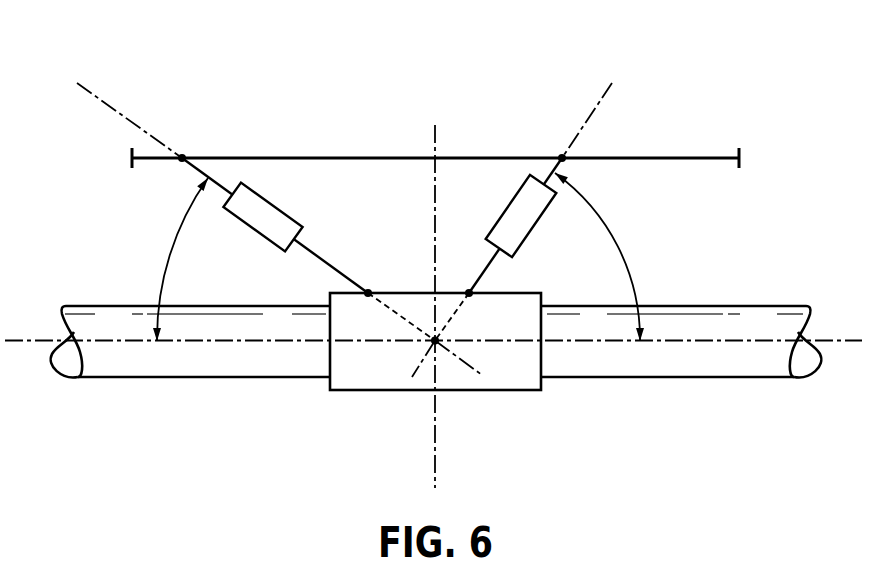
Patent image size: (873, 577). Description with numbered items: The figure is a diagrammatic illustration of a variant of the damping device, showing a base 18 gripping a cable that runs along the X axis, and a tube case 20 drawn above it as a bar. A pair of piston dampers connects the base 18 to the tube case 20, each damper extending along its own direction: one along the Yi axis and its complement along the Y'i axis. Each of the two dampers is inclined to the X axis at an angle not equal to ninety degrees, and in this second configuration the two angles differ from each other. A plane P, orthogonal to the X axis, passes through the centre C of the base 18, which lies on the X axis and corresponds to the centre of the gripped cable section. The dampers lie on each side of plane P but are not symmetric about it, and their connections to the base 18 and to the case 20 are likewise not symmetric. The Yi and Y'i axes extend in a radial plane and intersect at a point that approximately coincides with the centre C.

The base 18 is at (355, 390).
The tube case 20 is at (258, 157).
The X axis X is at (835, 337).
The plane P is at (435, 470).
The centre C is at (435, 341).
The Yi axis Yi is at (104, 98).
The Y'i axis Y'i is at (512, 207).